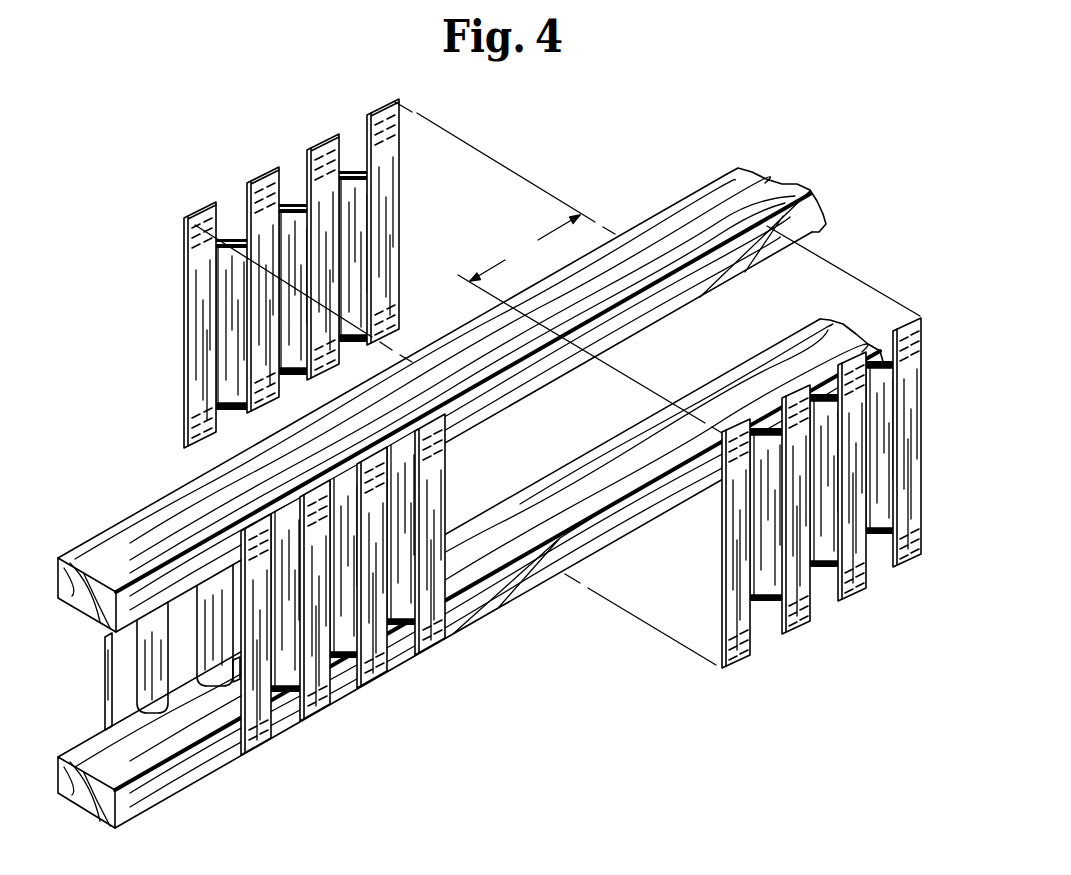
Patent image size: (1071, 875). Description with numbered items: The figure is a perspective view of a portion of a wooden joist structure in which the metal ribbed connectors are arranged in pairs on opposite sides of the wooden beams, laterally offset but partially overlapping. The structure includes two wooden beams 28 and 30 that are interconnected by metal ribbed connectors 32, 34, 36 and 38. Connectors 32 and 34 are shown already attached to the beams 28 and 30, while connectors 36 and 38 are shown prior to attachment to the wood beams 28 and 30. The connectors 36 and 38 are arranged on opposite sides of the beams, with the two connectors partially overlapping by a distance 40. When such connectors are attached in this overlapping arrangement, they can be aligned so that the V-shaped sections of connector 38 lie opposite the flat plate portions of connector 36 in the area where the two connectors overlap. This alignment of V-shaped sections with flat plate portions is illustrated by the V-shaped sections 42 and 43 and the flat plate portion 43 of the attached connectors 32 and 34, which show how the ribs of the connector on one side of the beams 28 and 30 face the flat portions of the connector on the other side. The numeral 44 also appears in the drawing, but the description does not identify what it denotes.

The wooden beam 28 is at (686, 198).
The wooden beam 30 is at (527, 591).
The metal ribbed connector 32 is at (105, 690).
The metal ribbed connector 34 is at (308, 714).
The metal ribbed connector 36 is at (183, 343).
The metal ribbed connector 38 is at (781, 635).
The overlap distance 40 is at (558, 267).
The V-shaped section 42 is at (197, 660).
The V-shaped section / flat plate portion 43 is at (236, 695).
The hanger tab 44 is at (285, 672).